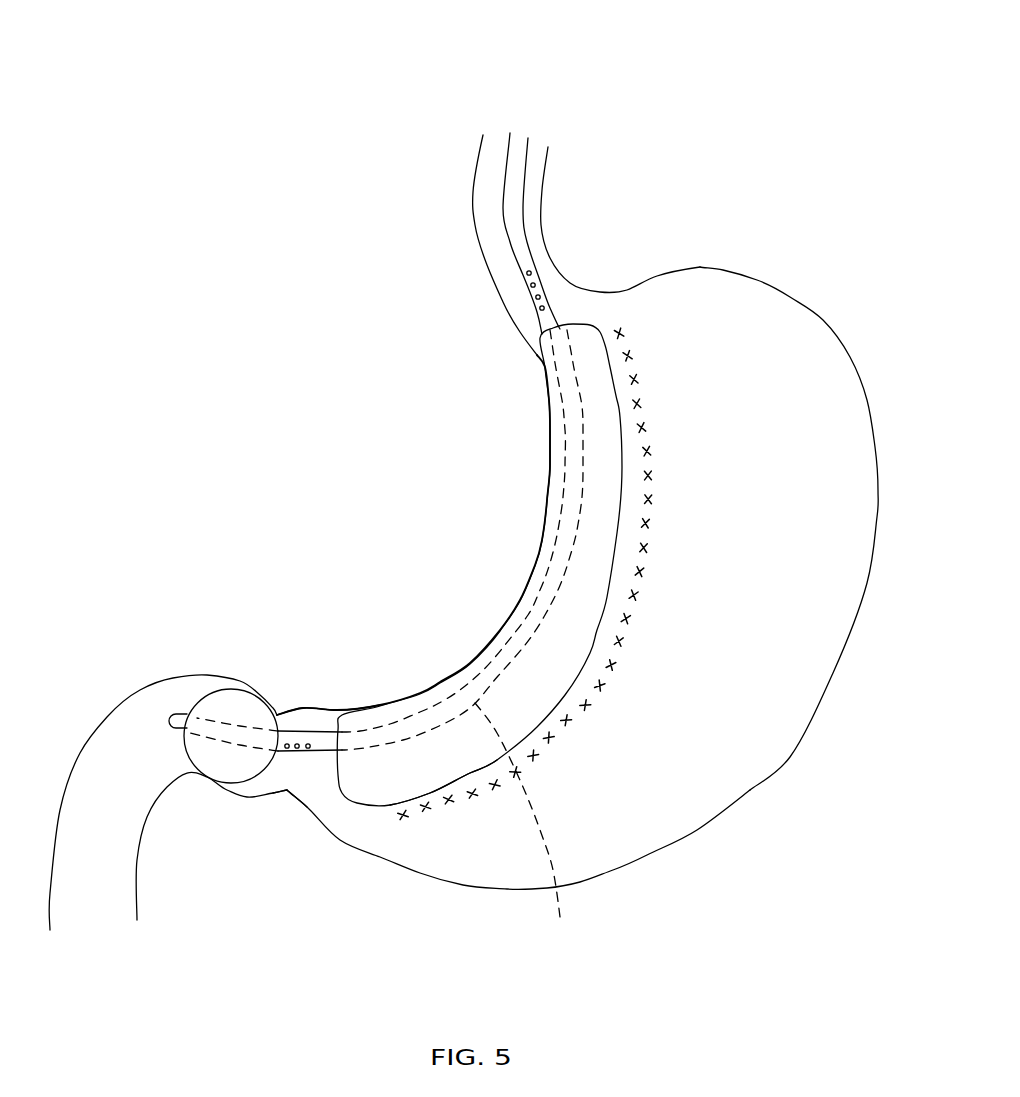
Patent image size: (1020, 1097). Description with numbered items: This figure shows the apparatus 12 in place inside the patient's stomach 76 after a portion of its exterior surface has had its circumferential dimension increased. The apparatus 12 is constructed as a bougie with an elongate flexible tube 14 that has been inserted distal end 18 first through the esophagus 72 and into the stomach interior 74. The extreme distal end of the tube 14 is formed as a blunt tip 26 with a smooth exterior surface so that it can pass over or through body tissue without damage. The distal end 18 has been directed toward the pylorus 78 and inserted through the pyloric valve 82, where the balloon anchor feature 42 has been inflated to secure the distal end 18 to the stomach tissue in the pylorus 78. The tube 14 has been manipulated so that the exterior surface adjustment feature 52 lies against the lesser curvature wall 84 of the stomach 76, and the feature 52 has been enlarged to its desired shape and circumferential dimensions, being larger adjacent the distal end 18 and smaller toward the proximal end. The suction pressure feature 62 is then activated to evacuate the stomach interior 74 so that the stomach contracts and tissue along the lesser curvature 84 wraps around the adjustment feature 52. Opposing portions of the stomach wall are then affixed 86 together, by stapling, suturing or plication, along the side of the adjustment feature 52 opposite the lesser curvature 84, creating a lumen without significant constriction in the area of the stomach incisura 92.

The apparatus 12 is at (578, 318).
The elongate flexible tube 14 is at (462, 541).
The distal end 18 is at (175, 740).
The blunt tip 26 is at (173, 718).
The anchor feature 42 is at (192, 716).
The exterior surface adjustment feature 52 is at (413, 803).
The suction pressure feature 62 is at (536, 272).
The esophagus 72 is at (559, 157).
The stomach interior 74 is at (700, 777).
The stomach 76 is at (833, 673).
The pylorus 78 is at (188, 700).
The pyloric valve 82 is at (283, 800).
The lesser curvature wall 84 is at (527, 587).
The affixed portions of stomach wall 86 is at (663, 473).
The stomach incisura 92 is at (395, 693).